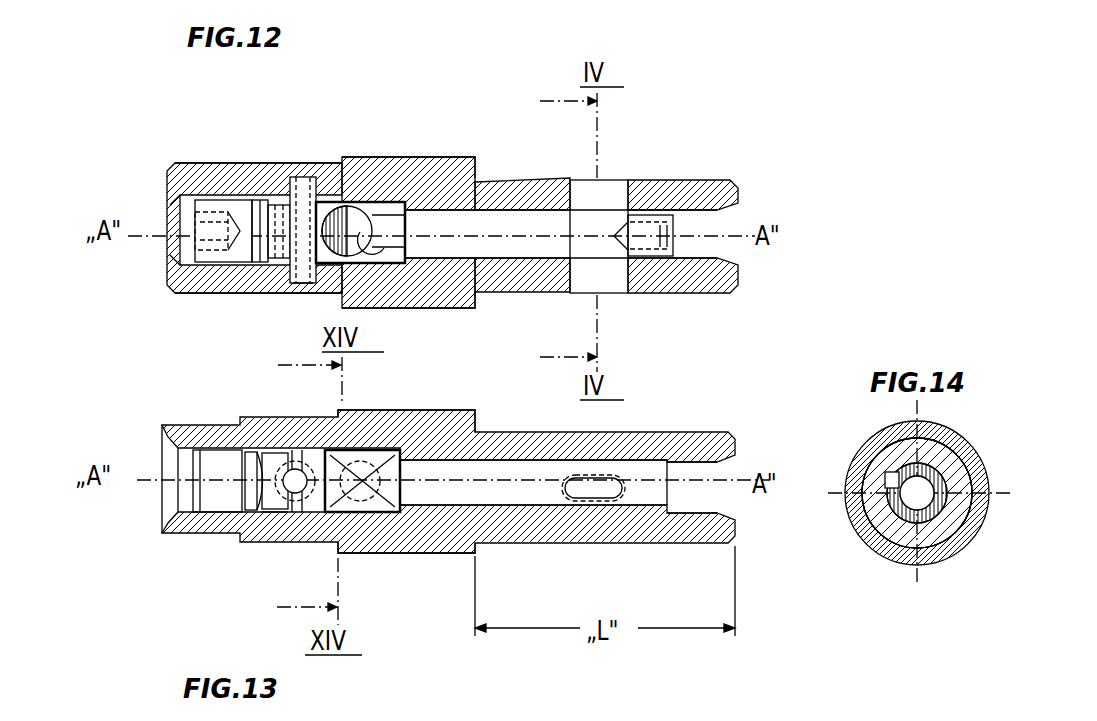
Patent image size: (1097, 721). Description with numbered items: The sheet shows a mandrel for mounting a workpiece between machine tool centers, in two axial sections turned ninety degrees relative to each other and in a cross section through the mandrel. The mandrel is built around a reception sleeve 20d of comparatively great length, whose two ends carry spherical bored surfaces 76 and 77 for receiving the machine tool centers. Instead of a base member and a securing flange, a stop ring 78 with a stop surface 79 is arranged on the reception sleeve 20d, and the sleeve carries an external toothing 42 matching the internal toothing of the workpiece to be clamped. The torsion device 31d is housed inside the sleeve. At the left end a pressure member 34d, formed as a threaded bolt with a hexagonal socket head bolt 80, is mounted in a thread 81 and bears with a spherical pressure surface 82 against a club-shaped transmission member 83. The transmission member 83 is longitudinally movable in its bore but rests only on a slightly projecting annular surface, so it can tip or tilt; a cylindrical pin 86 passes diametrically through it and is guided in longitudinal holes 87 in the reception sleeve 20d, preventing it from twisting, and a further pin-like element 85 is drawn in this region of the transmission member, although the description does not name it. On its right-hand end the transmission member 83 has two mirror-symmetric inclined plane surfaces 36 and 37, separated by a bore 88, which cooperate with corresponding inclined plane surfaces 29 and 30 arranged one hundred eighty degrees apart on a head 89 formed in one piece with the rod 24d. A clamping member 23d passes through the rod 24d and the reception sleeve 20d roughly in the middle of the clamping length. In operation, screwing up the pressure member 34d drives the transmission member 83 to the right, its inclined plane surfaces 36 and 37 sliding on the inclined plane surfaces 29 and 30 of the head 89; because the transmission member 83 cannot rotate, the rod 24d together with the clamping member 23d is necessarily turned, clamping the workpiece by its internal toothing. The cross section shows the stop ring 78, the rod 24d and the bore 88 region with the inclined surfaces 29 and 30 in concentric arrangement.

In FIG. 12, the torsion device 31d is at (178, 157).
In FIG. 13, the torsion device 31d is at (238, 412).
In FIG. 12, the spherical bored surface 77 is at (167, 218).
In FIG. 12, the hexagonal socket head bolt 80 is at (167, 255).
In FIG. 12, the pressure member 34d is at (240, 265).
In FIG. 13, the pressure member 34d is at (210, 495).
In FIG. 12, the thread 81 is at (210, 190).
In FIG. 12, the spherical pressure surface 82 is at (240, 205).
In FIG. 12, the transmission member 83 is at (270, 220).
In FIG. 13, the transmission member 83 is at (272, 452).
In FIG. 12, the transverse pin 85 is at (305, 180).
In FIG. 13, the transverse pin 85 is at (298, 512).
In FIG. 12, the cylindrical pin 86 is at (302, 293).
In FIG. 13, the cylindrical pin 86 is at (268, 540).
In FIG. 12, the stop ring 78 is at (400, 158).
In FIG. 14, the stop ring 78 is at (983, 513).
In FIG. 12, the stop surface 79 is at (478, 158).
In FIG. 12, the longitudinal holes 87 is at (312, 200).
In FIG. 13, the longitudinal holes 87 is at (345, 545).
In FIG. 12, the inclined plane surface 36 is at (350, 262).
In FIG. 13, the inclined plane surface 36 is at (298, 468).
In FIG. 12, the head 89 is at (390, 215).
In FIG. 12, the bore 88 is at (370, 250).
In FIG. 14, the bore 88 is at (947, 550).
In FIG. 12, the reception sleeve 20d is at (525, 198).
In FIG. 12, the rod 24d is at (522, 245).
In FIG. 13, the rod 24d is at (542, 497).
In FIG. 14, the rod 24d is at (960, 477).
In FIG. 12, the clamping member 23d is at (612, 197).
In FIG. 13, the clamping member 23d is at (600, 478).
In FIG. 12, the external toothing 42 is at (675, 195).
In FIG. 12, the spherical bored surface 76 is at (735, 222).
In FIG. 13, the inclined plane surface 29 is at (400, 411).
In FIG. 14, the inclined plane surface 29 is at (952, 457).
In FIG. 13, the inclined plane surface 30 is at (455, 462).
In FIG. 14, the inclined plane surface 30 is at (878, 538).
In FIG. 13, the inclined plane surface 37 is at (415, 545).